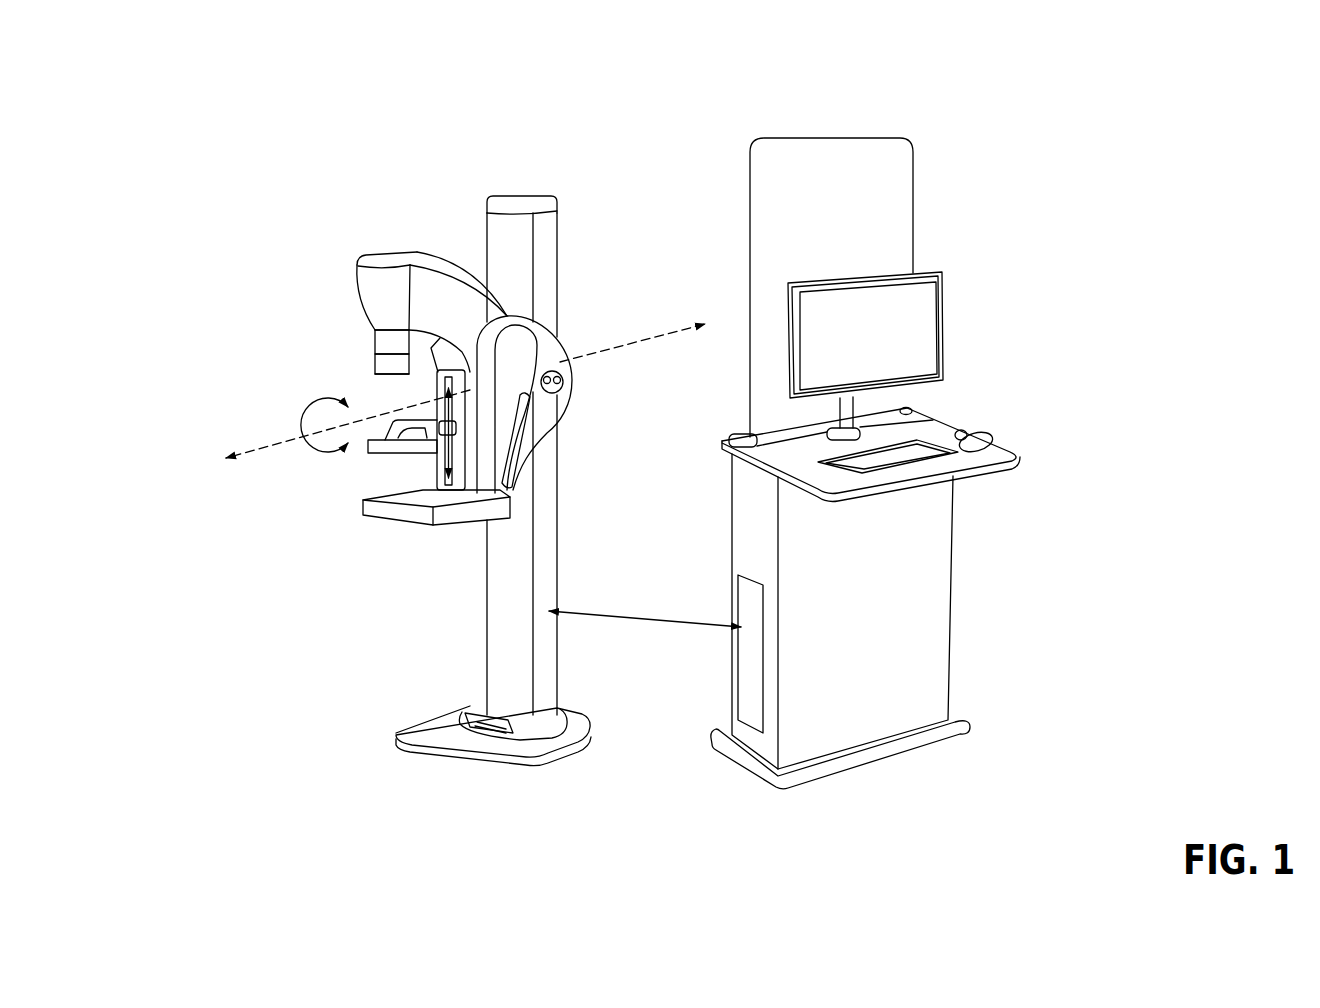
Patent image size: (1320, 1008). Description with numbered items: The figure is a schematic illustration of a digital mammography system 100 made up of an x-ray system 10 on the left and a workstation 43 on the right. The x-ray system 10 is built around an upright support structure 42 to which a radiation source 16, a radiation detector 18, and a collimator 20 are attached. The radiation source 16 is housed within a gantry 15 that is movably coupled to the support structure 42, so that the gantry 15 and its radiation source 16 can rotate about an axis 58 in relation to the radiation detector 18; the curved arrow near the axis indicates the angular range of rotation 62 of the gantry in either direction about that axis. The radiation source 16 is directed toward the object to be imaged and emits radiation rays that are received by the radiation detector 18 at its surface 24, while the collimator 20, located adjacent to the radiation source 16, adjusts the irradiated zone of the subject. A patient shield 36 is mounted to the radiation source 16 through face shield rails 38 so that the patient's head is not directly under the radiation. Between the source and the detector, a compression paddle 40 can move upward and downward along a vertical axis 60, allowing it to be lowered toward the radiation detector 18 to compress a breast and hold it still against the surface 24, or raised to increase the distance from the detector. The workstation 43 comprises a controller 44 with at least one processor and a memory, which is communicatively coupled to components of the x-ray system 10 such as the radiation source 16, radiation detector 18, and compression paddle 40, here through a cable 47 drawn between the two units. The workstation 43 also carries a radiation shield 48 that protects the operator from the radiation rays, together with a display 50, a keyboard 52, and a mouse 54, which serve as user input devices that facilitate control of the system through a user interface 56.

The digital mammography system 100 is at (108, 88).
The x-ray system 10 is at (302, 191).
The gantry 15 is at (358, 260).
The radiation source 16 is at (366, 308).
The face shield rails 38 is at (375, 333).
The collimator 20 is at (376, 360).
The patient shield 36 is at (373, 380).
The radiation detector 18 is at (372, 522).
The surface 24 is at (366, 497).
The compression paddle 40 is at (372, 453).
The support structure 42 is at (557, 280).
The workstation 43 is at (958, 146).
The controller 44 is at (731, 521).
The cable 47 is at (648, 606).
The radiation shield 48 is at (886, 234).
The display 50 is at (943, 296).
The keyboard 52 is at (915, 450).
The mouse 54 is at (986, 438).
The user interface 56 is at (926, 353).
The axis 58 is at (268, 443).
The vertical axis 60 is at (478, 461).
The rotation direction 62 is at (307, 448).